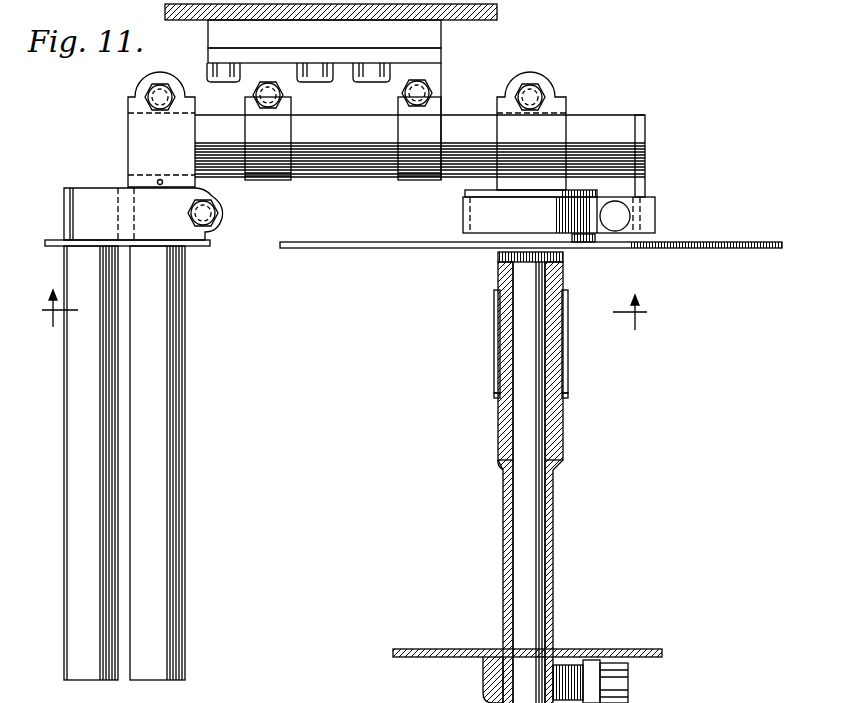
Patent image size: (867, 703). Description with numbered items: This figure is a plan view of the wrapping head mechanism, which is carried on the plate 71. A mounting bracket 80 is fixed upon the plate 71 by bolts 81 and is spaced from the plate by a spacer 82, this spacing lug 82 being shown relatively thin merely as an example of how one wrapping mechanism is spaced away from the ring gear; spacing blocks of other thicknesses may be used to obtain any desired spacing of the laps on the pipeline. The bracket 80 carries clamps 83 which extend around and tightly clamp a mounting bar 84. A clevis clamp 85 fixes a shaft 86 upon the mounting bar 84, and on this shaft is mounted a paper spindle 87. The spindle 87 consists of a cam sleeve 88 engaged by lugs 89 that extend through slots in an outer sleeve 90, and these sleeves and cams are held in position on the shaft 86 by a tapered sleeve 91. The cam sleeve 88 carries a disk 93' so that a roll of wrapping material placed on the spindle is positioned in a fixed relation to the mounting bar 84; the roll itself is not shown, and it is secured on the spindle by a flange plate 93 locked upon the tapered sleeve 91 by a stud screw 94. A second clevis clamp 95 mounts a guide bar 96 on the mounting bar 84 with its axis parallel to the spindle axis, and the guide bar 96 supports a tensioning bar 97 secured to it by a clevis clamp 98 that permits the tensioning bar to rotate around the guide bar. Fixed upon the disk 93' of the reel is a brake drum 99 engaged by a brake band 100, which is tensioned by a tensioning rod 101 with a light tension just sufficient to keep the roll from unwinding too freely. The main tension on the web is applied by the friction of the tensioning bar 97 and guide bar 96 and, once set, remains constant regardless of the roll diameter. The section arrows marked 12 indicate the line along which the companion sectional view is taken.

The plate 71 is at (485, 17).
The spacer 82 is at (435, 33).
The mounting bracket 80 is at (433, 58).
The bolts 81 is at (371, 77).
The mounting bar 84 is at (345, 157).
The clamps 83 is at (270, 168).
The clevis clamp 85 is at (560, 105).
The clevis clamp 95 is at (137, 132).
The clevis clamp 98 is at (168, 228).
The tensioning bar 97 is at (78, 517).
The guide bar 96 is at (185, 418).
The brake drum 99 is at (580, 190).
The brake band 100 is at (480, 217).
The tensioning rod 101 is at (622, 215).
The disk 93' is at (531, 264).
The section line 12 is at (343, 310).
The cam sleeve 88 is at (497, 423).
The lugs 89 is at (495, 347).
The outer sleeve 90 is at (498, 398).
The paper spindle 87 is at (565, 457).
The tapered sleeve 91 is at (503, 472).
The shaft 86 is at (536, 540).
The flange plate 93 is at (527, 650).
The stud screw 94 is at (627, 682).